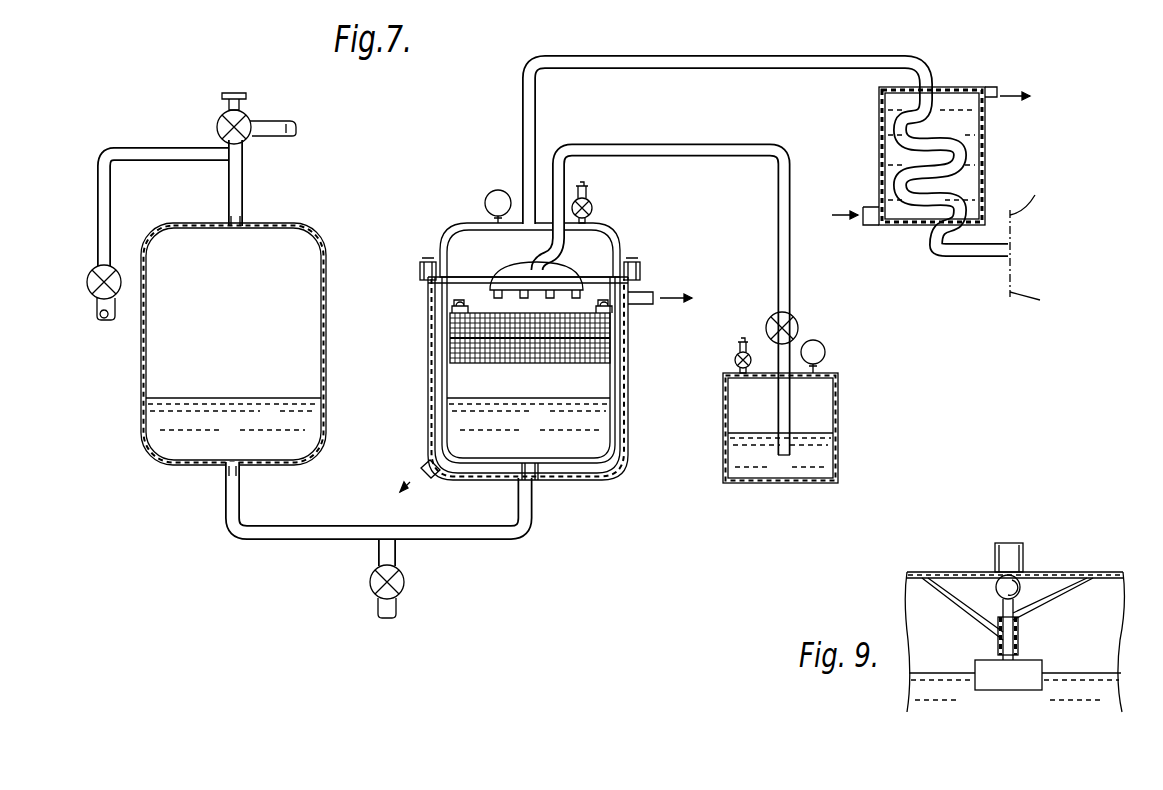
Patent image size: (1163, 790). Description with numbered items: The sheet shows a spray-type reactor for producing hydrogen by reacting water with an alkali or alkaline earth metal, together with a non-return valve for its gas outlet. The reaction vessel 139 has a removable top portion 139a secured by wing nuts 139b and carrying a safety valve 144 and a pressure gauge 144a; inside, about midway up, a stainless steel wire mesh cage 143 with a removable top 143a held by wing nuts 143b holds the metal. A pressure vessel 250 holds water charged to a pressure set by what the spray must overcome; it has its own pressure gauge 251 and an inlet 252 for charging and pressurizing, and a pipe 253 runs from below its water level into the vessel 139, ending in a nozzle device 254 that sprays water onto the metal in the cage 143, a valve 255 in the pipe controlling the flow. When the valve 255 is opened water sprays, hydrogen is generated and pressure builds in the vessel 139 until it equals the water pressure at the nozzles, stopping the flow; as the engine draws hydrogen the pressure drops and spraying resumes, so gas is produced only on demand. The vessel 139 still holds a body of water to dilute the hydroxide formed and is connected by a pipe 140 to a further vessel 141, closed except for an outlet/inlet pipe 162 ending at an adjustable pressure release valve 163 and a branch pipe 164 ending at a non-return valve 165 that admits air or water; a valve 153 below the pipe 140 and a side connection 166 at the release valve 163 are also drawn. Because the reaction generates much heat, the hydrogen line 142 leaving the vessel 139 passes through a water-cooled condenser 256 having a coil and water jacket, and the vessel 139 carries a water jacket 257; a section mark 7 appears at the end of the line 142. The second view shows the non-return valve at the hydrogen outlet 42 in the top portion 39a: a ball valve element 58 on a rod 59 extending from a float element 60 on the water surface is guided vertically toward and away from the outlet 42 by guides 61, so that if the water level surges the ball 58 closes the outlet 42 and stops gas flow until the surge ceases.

In FIG. 7, the section line 7 is at (1036, 244).
In FIG. 7, the vessel 139 is at (590, 448).
In FIG. 7, the top portion 139a is at (600, 262).
In FIG. 7, the wing nuts 139b is at (420, 264).
In FIG. 7, the water pipe 140 is at (315, 544).
In FIG. 7, the further vessel 141 is at (180, 448).
In FIG. 7, the hydrogen outlet line 142 is at (540, 55).
In FIG. 7, the wire mesh cage 143 is at (605, 345).
In FIG. 7, the removable top 143a is at (608, 322).
In FIG. 7, the wing nuts 143b is at (450, 320).
In FIG. 7, the safety valve 144 is at (592, 202).
In FIG. 7, the pressure gauge 144a is at (492, 193).
In FIG. 7, the drain valve 153 is at (405, 585).
In FIG. 7, the outlet/inlet pipe 162 is at (240, 188).
In FIG. 7, the adjustable pressure release valve 163 is at (244, 107).
In FIG. 7, the branch pipe 164 is at (148, 156).
In FIG. 7, the non-return valve 165 is at (90, 300).
In FIG. 7, the fill connection 166 is at (285, 118).
In FIG. 7, the pressure vessel 250 is at (760, 466).
In FIG. 7, the pressure gauge 251 is at (825, 354).
In FIG. 7, the inlet 252 is at (742, 348).
In FIG. 7, the pipe 253 is at (792, 158).
In FIG. 7, the nozzle device 254 is at (560, 270).
In FIG. 7, the valve 255 is at (797, 318).
In FIG. 7, the condenser 256 is at (955, 88).
In FIG. 7, the water jacket 257 is at (572, 485).
In FIG. 9, the top portion 39a is at (1090, 572).
In FIG. 9, the hydrogen outlet 42 is at (1012, 560).
In FIG. 9, the ball valve element 58 is at (1000, 590).
In FIG. 9, the rod 59 is at (1016, 605).
In FIG. 9, the float element 60 is at (1030, 675).
In FIG. 9, the guides 61 is at (998, 645).